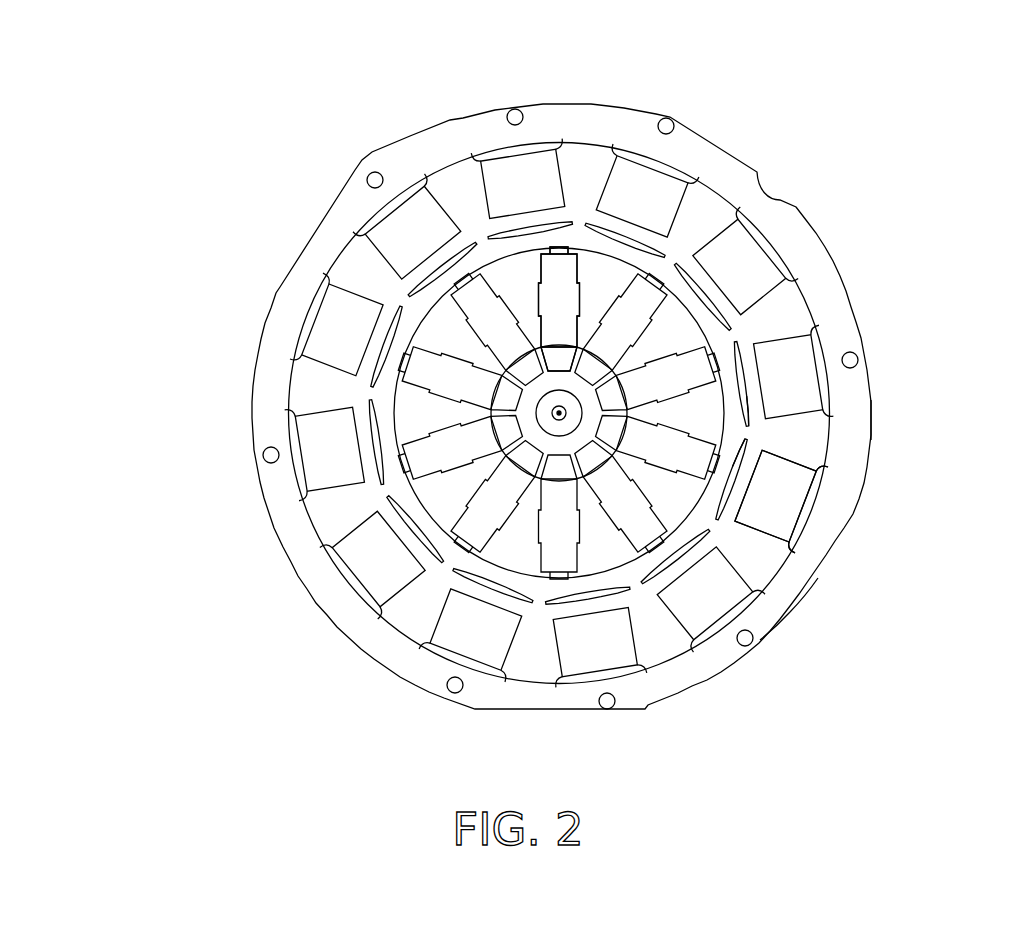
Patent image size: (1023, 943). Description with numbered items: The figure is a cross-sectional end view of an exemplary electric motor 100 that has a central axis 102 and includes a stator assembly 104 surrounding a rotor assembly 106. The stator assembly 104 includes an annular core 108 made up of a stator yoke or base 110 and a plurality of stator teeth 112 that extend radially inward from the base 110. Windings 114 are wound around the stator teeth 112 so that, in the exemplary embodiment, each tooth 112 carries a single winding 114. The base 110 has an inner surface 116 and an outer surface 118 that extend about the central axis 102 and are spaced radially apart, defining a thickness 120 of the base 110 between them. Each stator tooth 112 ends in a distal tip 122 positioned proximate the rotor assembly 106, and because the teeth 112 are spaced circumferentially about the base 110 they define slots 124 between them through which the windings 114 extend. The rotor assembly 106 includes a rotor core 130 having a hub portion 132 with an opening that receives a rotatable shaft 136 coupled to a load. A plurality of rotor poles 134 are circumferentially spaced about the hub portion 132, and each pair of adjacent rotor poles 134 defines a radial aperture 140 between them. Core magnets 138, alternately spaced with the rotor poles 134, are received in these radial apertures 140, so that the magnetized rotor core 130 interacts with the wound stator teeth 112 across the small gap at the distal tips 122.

The electric motor 100 is at (917, 125).
The central axis 102 is at (777, 520).
The stator assembly 104 is at (316, 183).
The rotor assembly 106 is at (725, 357).
The annular core 108 is at (285, 516).
The stator yoke or base 110 is at (680, 677).
The stator teeth 112 is at (557, 600).
The windings 114 is at (377, 563).
The inner surface 116 is at (777, 583).
The outer surface 118 is at (812, 577).
The thickness 120 is at (880, 418).
The distal tip 122 is at (393, 505).
The slots 124 is at (653, 640).
The rotor core 130 is at (461, 330).
The hub portion 132 is at (708, 325).
The rotor poles 134 is at (820, 425).
The rotatable shaft 136 is at (545, 412).
The core magnets 138 is at (640, 297).
The radial aperture 140 is at (542, 240).